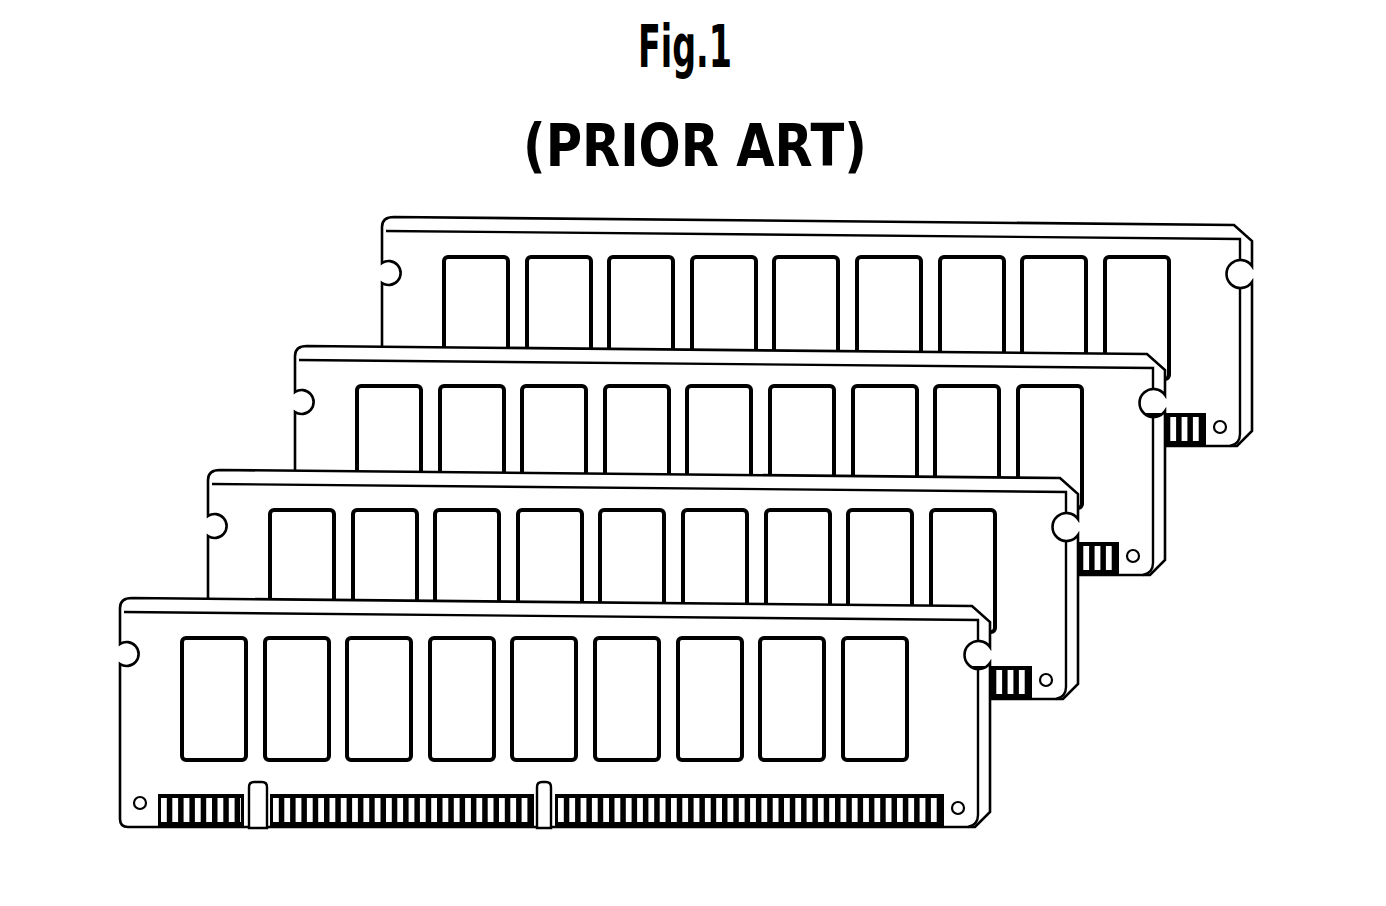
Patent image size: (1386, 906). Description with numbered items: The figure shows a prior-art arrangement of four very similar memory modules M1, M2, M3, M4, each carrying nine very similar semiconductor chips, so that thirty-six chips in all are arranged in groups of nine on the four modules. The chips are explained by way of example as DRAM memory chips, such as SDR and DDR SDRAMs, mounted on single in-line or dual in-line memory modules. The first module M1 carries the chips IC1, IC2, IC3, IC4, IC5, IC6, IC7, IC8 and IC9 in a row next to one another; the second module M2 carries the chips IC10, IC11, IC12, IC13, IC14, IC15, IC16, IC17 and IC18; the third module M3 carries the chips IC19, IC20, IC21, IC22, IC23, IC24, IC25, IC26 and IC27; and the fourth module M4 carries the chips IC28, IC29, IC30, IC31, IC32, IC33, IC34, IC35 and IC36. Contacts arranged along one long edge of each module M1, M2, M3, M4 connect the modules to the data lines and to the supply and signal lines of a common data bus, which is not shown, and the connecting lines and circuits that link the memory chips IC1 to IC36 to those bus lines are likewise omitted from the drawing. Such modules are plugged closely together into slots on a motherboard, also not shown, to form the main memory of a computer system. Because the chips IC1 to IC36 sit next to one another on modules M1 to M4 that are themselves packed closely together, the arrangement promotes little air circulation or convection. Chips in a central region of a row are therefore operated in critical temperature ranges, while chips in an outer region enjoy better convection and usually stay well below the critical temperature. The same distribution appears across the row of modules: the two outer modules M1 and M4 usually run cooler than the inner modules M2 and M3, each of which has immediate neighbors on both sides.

The memory module M1 is at (990, 757).
The memory module M2 is at (692, 585).
The memory module M3 is at (779, 461).
The memory module M4 is at (866, 332).
The semiconductor chip IC1 is at (214, 699).
The semiconductor chip IC2 is at (297, 699).
The semiconductor chip IC3 is at (379, 699).
The semiconductor chip IC4 is at (462, 699).
The semiconductor chip IC5 is at (544, 699).
The semiconductor chip IC6 is at (627, 699).
The semiconductor chip IC7 is at (710, 699).
The semiconductor chip IC8 is at (792, 699).
The semiconductor chip IC9 is at (875, 699).
The semiconductor chip IC10 is at (302, 571).
The semiconductor chip IC11 is at (385, 571).
The semiconductor chip IC12 is at (467, 571).
The semiconductor chip IC13 is at (550, 571).
The semiconductor chip IC14 is at (632, 571).
The semiconductor chip IC15 is at (715, 571).
The semiconductor chip IC16 is at (798, 571).
The semiconductor chip IC17 is at (880, 571).
The semiconductor chip IC18 is at (963, 571).
The semiconductor chip IC19 is at (389, 447).
The semiconductor chip IC20 is at (472, 447).
The semiconductor chip IC21 is at (554, 447).
The semiconductor chip IC22 is at (637, 447).
The semiconductor chip IC23 is at (719, 447).
The semiconductor chip IC24 is at (802, 447).
The semiconductor chip IC25 is at (885, 447).
The semiconductor chip IC26 is at (967, 447).
The semiconductor chip IC27 is at (1050, 447).
The semiconductor chip IC28 is at (476, 318).
The semiconductor chip IC29 is at (559, 318).
The semiconductor chip IC30 is at (641, 318).
The semiconductor chip IC31 is at (724, 318).
The semiconductor chip IC32 is at (806, 318).
The semiconductor chip IC33 is at (889, 318).
The semiconductor chip IC34 is at (972, 318).
The semiconductor chip IC35 is at (1054, 318).
The semiconductor chip IC36 is at (1137, 318).